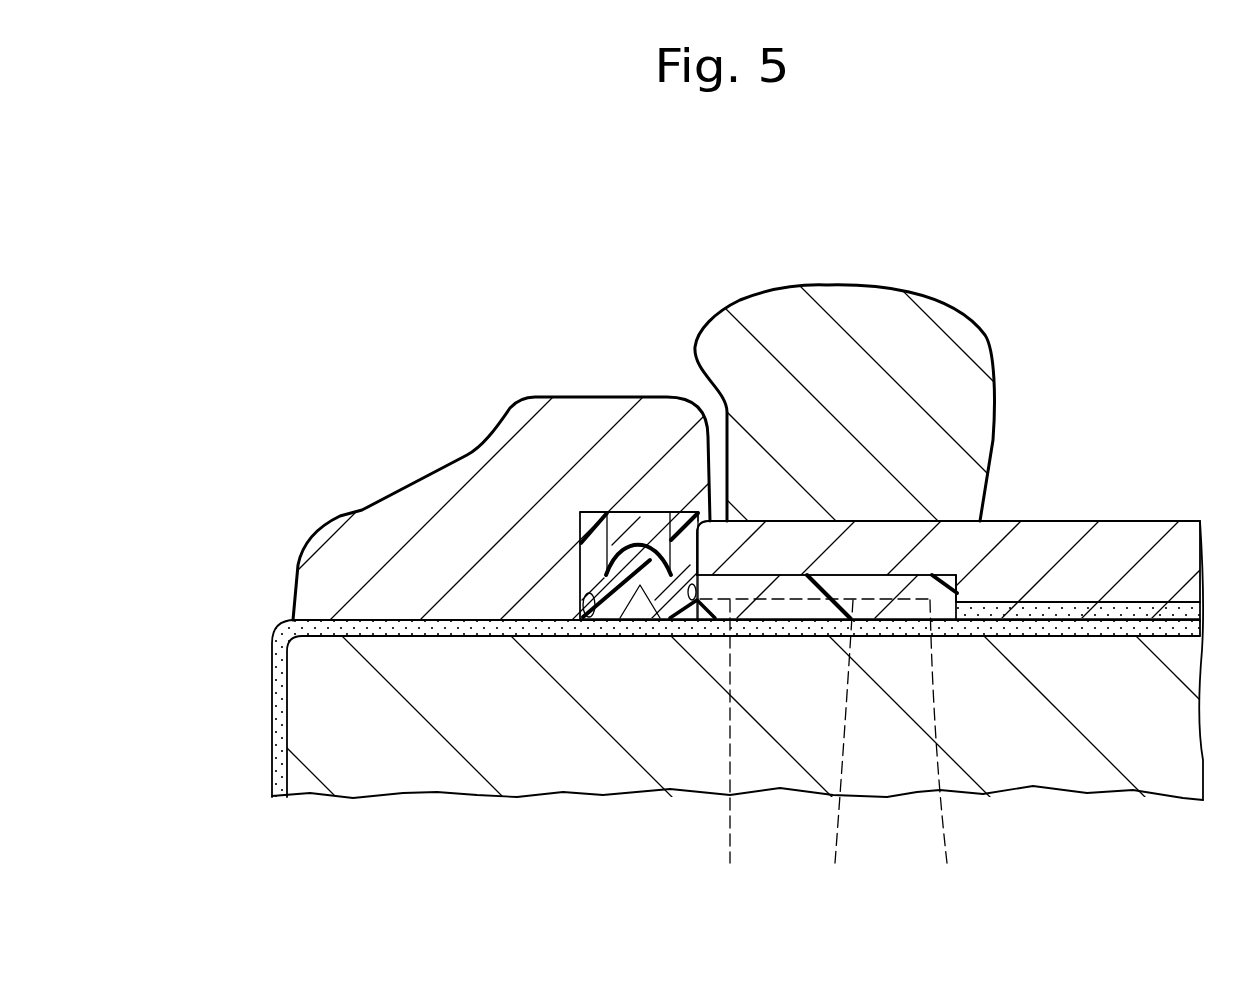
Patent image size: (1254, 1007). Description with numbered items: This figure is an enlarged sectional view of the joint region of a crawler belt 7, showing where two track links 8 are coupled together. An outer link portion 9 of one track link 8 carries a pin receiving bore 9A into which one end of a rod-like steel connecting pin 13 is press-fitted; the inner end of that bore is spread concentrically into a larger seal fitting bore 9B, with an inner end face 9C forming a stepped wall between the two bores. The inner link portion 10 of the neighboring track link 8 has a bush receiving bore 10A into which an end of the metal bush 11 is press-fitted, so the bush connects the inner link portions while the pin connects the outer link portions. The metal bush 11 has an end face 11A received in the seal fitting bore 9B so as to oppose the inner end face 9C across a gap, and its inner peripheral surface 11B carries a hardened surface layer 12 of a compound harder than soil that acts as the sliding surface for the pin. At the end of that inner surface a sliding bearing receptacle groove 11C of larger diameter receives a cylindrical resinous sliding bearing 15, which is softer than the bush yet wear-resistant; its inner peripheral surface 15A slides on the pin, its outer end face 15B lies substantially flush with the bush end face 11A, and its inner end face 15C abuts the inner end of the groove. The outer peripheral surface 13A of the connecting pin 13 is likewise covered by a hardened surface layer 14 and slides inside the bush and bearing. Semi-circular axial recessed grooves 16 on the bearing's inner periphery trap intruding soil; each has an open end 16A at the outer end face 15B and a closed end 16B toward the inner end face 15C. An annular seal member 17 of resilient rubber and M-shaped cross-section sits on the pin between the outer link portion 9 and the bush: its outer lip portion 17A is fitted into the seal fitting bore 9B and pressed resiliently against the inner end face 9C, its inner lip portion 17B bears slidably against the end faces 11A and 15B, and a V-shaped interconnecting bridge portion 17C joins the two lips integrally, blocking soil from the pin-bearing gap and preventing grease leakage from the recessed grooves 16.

The crawler belt 7 is at (437, 398).
The track link 8 is at (339, 506).
The outer link portion 9 is at (397, 507).
The pin receiving bore 9A is at (390, 624).
The seal fitting bore 9B is at (627, 514).
The inner end face 9C is at (600, 600).
The inner link portion 10 is at (804, 320).
The bush receiving bore 10A is at (932, 523).
The metal bush 11 is at (1113, 537).
The end face 11A is at (678, 512).
The inner peripheral surface 11B is at (1145, 604).
The sliding bearing receptacle groove 11C is at (903, 583).
The hardened surface layer 12 is at (1043, 612).
The connecting pin 13 is at (465, 778).
The outer peripheral surface 13A is at (1112, 627).
The hardened surface layer 14 is at (1067, 627).
The resinous sliding bearing 15 is at (787, 605).
The inner peripheral surface 15A is at (883, 605).
The outer end face 15B is at (684, 567).
The inner end face 15C is at (967, 590).
The recessed groove 16 is at (842, 747).
The open end 16A is at (728, 747).
The closed end 16B is at (957, 747).
The annular seal member 17 is at (645, 573).
The outer lip portion 17A is at (590, 523).
The inner lip portion 17B is at (690, 520).
The interconnecting bridge portion 17C is at (646, 557).